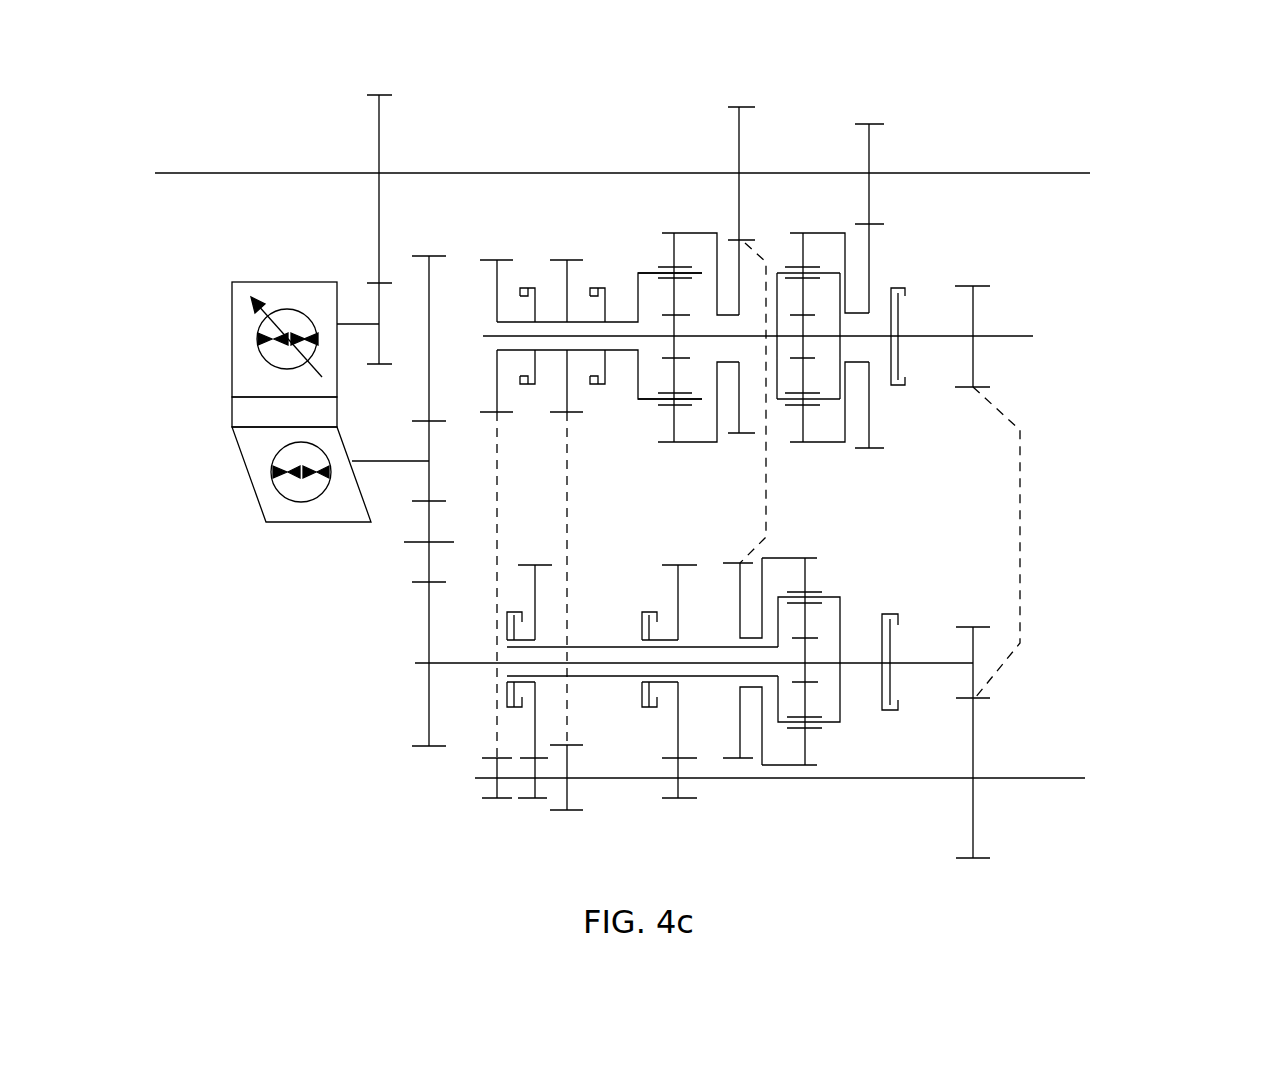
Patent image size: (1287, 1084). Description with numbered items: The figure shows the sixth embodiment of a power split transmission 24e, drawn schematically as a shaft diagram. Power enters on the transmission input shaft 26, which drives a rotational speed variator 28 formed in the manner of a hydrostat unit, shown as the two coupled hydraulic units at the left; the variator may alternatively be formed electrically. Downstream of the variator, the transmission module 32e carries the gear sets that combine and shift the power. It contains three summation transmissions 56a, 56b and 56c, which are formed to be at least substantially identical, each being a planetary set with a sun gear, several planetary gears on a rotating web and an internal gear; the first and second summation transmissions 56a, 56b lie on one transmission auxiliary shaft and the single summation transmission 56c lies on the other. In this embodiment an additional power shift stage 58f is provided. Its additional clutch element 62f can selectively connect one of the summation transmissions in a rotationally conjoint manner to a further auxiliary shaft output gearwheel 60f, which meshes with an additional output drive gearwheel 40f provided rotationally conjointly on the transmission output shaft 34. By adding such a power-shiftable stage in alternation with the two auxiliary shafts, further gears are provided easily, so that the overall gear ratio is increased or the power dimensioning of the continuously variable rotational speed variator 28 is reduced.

The transmission input shaft 26 is at (203, 173).
The rotational speed variator 28 is at (226, 506).
The power split transmission 24e is at (1113, 261).
The transmission module 32e is at (1070, 439).
The first summation transmission 56a is at (672, 228).
The second summation transmission 56b is at (811, 218).
The summation transmission 56c is at (834, 737).
The additional power shift stage 58f is at (517, 562).
The further auxiliary shaft output gearwheel 60f is at (535, 592).
The additional clutch element 62f is at (509, 714).
The additional output drive gearwheel 40f is at (534, 785).
The transmission output shaft 34 is at (1016, 780).